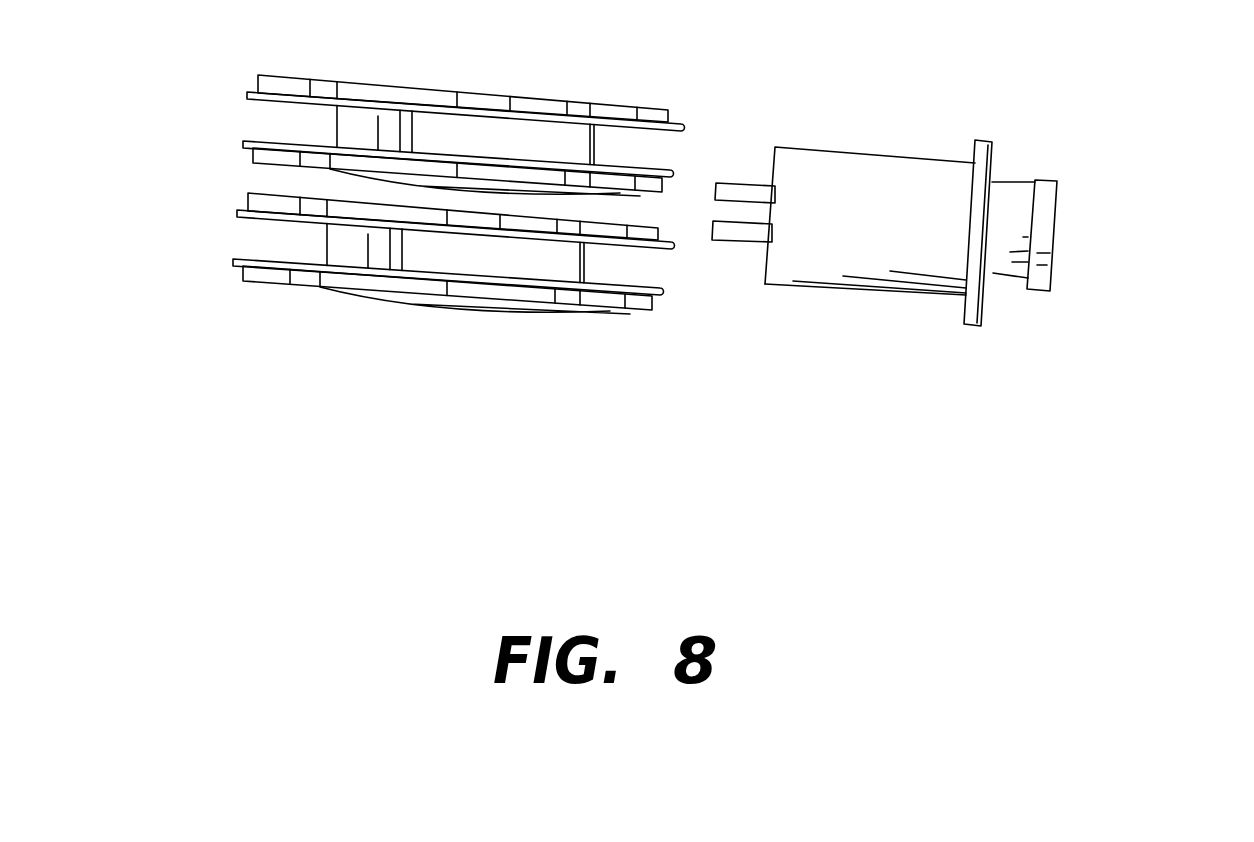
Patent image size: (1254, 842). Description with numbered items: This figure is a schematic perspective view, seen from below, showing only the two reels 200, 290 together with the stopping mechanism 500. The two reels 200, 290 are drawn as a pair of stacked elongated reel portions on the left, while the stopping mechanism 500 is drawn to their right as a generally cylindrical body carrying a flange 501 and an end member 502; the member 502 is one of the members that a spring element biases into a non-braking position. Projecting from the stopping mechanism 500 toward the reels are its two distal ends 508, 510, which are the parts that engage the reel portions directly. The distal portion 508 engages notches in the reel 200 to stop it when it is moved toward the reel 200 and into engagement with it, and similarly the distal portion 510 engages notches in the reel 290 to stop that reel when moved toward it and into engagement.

The reel 200 is at (236, 118).
The reel 290 is at (231, 238).
The stopping mechanism 500 is at (950, 190).
The flange 501 is at (997, 158).
The member 502 is at (1057, 208).
The distal end 508 is at (743, 182).
The distal end 510 is at (743, 243).